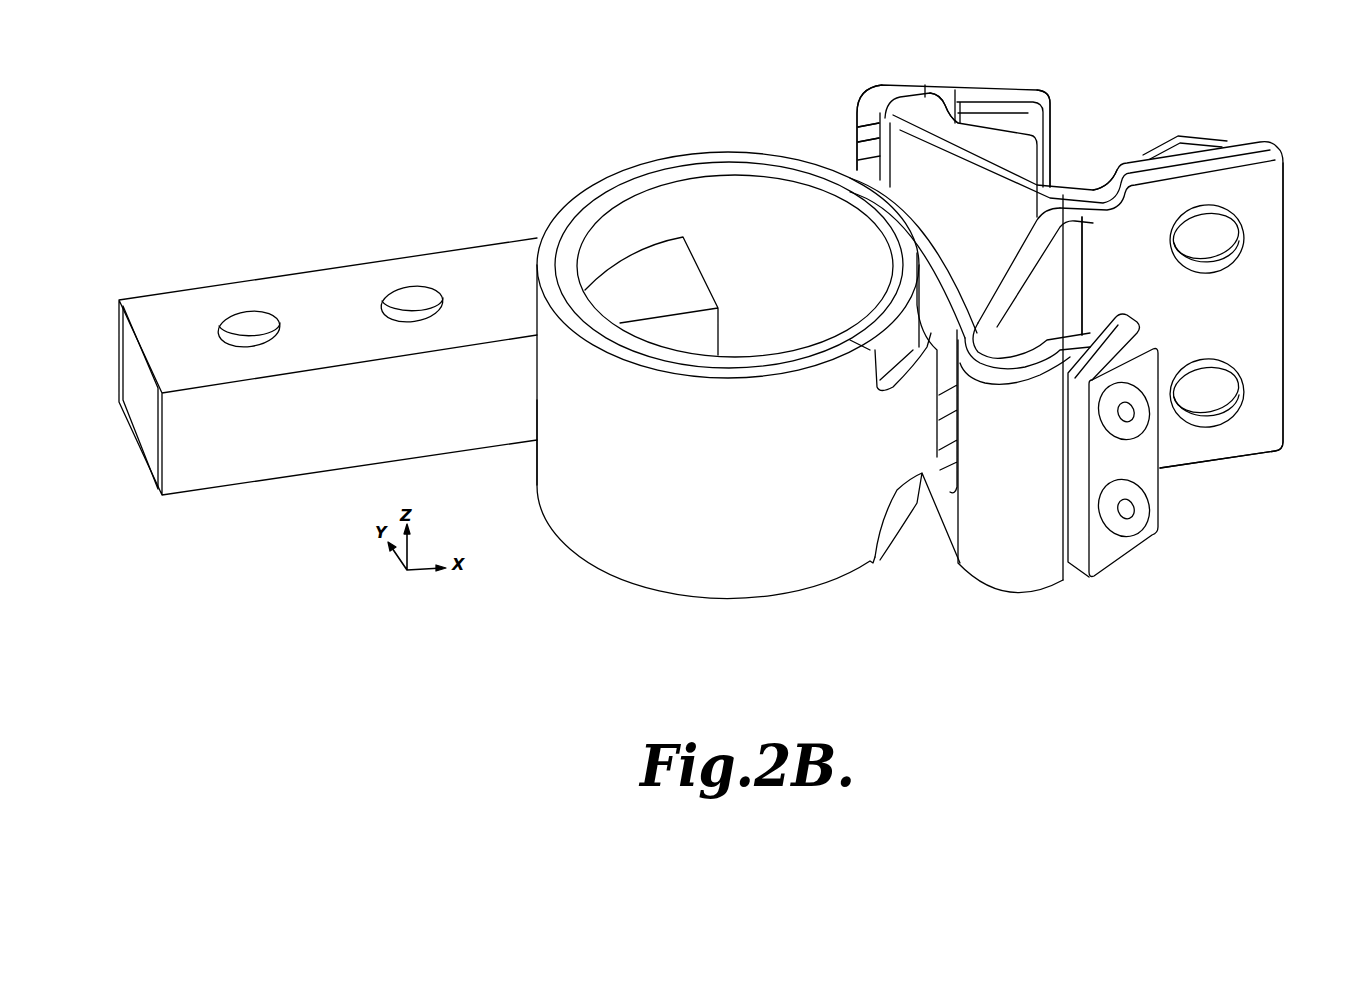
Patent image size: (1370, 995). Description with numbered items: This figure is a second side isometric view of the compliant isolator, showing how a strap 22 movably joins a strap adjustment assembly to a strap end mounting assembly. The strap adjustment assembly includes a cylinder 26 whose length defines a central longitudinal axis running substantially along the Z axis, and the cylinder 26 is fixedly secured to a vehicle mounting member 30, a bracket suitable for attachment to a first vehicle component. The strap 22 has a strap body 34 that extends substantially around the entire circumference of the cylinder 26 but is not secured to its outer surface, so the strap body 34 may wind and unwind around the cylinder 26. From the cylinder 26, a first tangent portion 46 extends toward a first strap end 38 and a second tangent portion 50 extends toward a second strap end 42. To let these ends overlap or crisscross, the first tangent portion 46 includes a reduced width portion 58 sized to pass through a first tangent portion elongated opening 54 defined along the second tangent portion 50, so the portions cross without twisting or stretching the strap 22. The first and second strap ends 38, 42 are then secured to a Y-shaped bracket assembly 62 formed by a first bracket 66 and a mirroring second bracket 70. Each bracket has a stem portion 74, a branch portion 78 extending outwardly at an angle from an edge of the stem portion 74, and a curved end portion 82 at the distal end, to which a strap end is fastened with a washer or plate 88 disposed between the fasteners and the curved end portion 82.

The strap 22 is at (660, 142).
The cylinder 26 is at (590, 195).
The vehicle mounting member 30 is at (325, 282).
The strap body 34 is at (700, 560).
The first strap end 38 is at (866, 112).
The second strap end 42 is at (1040, 568).
The first tangent portion 46 is at (897, 518).
The second tangent portion 50 is at (1044, 334).
The first tangent portion elongated opening 54 is at (942, 487).
The reduced width portion 58 is at (933, 410).
The Y-shaped bracket assembly 62 is at (1216, 292).
The first bracket 66 is at (1063, 181).
The second bracket 70 is at (1220, 444).
The stem portion 74 is at (1208, 150).
The branch portion 78 is at (910, 160).
The curved end portion 82 is at (928, 90).
The washer or plate 88 is at (1030, 96).